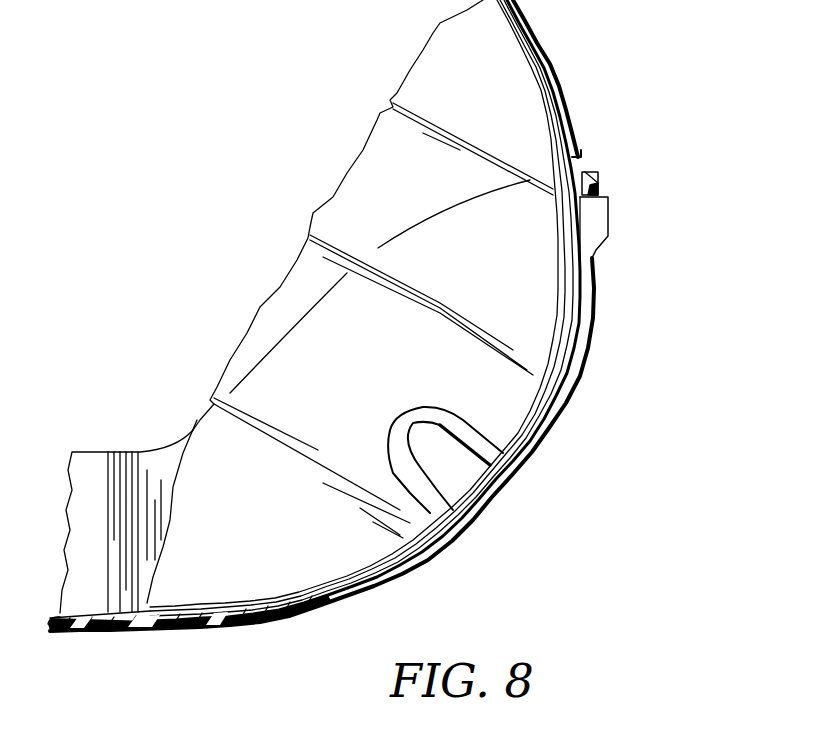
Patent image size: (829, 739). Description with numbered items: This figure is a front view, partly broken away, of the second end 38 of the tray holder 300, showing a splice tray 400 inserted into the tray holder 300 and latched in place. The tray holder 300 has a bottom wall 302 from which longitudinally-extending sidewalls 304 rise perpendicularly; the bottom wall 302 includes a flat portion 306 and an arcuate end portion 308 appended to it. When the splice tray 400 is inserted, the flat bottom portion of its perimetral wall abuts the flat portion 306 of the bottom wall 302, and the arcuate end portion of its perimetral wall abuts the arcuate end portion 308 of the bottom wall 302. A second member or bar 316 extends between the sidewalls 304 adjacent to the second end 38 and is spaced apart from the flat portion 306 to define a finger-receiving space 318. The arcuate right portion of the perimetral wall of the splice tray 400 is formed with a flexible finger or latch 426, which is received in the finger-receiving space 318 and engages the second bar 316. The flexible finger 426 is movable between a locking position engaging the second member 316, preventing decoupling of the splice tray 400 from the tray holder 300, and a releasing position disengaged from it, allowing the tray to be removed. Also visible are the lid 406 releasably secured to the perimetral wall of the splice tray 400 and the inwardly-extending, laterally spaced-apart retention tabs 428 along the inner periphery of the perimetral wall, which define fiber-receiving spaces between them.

The second end 38 is at (638, 397).
The tray holder 300 is at (516, 552).
The bottom wall 302 is at (222, 643).
The sidewalls 304 is at (93, 475).
The flat portion 306 is at (123, 630).
The arcuate end portion 308 is at (553, 446).
The second member or bar 316 is at (598, 173).
The finger-receiving space 318 is at (606, 304).
The splice tray 400 is at (283, 258).
The lid 406 is at (364, 178).
The flexible finger or latch 426 is at (598, 218).
The retention tabs 428 is at (400, 432).